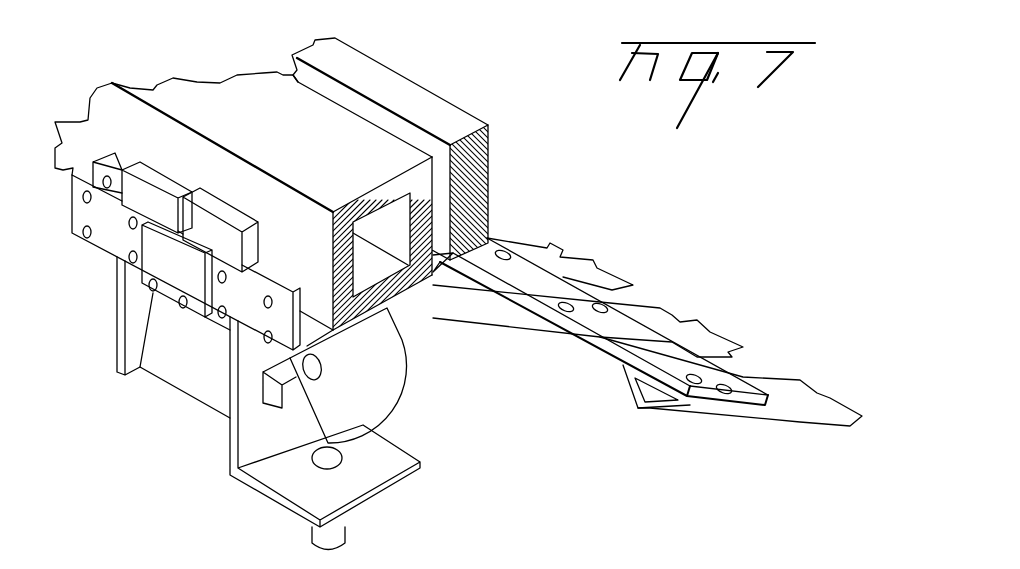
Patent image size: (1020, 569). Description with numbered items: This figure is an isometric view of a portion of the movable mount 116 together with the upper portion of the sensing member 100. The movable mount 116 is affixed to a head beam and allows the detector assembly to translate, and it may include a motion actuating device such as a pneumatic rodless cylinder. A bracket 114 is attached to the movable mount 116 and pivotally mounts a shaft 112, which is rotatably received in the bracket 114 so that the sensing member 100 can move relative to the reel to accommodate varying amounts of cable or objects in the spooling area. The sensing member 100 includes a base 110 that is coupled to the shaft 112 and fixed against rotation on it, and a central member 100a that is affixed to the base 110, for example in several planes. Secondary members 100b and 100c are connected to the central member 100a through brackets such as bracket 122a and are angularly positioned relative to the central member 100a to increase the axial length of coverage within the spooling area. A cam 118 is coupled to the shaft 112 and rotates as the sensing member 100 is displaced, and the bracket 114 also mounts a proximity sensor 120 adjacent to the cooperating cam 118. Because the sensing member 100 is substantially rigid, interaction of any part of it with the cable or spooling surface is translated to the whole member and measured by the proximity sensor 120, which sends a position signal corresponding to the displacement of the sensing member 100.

The sensing member 100 is at (647, 326).
The central member 100a is at (690, 330).
The secondary member 100b is at (813, 402).
The secondary member 100c is at (550, 248).
The base 110 is at (185, 353).
The shaft 112 is at (322, 362).
The bracket 114 is at (237, 447).
The movable mount 116 is at (247, 113).
The cam 118 is at (368, 393).
The proximity sensor 120 is at (337, 530).
The bracket 122a is at (633, 335).